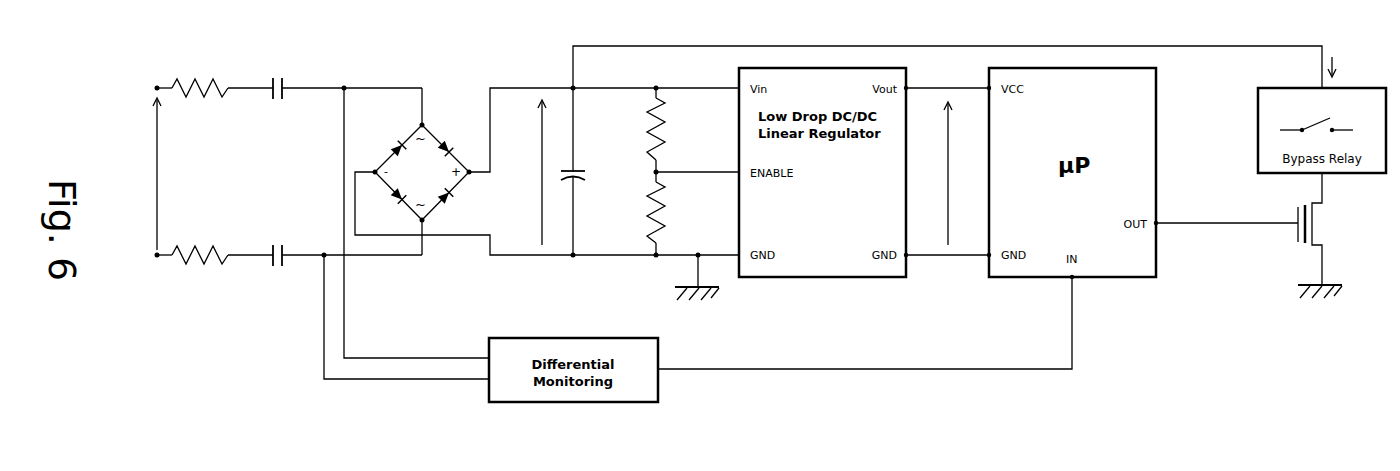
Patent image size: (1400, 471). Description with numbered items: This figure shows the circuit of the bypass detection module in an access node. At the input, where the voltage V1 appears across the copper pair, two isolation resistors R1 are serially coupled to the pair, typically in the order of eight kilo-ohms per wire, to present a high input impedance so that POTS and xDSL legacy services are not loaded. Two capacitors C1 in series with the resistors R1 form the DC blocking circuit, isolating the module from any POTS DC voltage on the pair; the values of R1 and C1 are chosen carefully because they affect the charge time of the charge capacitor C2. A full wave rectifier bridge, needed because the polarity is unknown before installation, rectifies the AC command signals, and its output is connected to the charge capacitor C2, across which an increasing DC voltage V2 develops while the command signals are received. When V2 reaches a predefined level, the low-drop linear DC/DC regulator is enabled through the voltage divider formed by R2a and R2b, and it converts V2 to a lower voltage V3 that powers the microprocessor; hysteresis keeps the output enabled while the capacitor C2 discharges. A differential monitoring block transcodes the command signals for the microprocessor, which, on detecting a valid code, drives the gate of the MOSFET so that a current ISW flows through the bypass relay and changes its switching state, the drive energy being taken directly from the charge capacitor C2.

The isolation resistor R1 is at (200, 171).
The capacitor C1 is at (277, 172).
The voltage at the input of the bypass detection module V1 is at (146, 174).
The DC voltage V2 is at (532, 172).
The charge capacitor C2 is at (580, 172).
The voltage divider resistor R2a is at (672, 130).
The voltage divider resistor R2b is at (673, 213).
The lower voltage V3 is at (937, 173).
The current ISW is at (1343, 67).